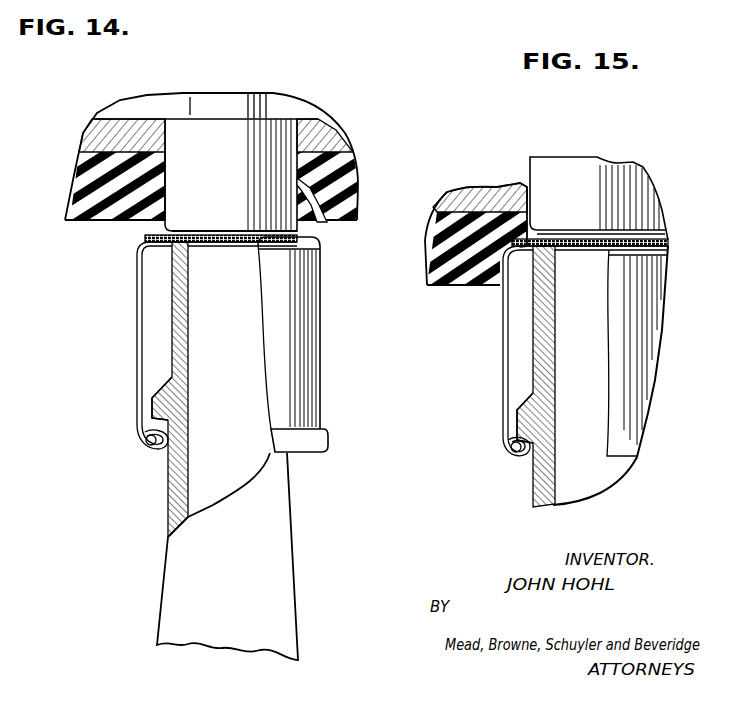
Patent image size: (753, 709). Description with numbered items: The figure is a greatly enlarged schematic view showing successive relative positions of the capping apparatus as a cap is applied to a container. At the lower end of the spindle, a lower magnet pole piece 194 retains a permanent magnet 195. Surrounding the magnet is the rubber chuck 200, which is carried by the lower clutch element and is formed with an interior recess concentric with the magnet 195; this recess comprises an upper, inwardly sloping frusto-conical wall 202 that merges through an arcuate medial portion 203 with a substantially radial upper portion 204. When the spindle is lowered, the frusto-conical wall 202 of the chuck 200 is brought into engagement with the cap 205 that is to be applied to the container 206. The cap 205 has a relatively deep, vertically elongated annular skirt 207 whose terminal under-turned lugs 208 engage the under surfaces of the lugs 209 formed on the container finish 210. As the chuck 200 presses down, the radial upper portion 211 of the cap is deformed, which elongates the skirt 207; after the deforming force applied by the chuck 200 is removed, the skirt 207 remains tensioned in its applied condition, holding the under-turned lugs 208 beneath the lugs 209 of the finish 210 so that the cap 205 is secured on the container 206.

In FIG. 14, the lower magnet pole piece 194 is at (228, 231).
In FIG. 15, the lower magnet pole piece 194 is at (552, 234).
In FIG. 14, the permanent magnet 195 is at (235, 170).
In FIG. 15, the permanent magnet 195 is at (600, 202).
In FIG. 14, the rubber chuck 200 is at (340, 190).
In FIG. 15, the rubber chuck 200 is at (425, 245).
In FIG. 14, the frusto-conical wall 202 is at (140, 212).
In FIG. 14, the arcuate medial portion 203 is at (158, 180).
In FIG. 14, the radial upper portion 204 is at (312, 222).
In FIG. 14, the cap 205 is at (300, 342).
In FIG. 15, the cap 205 is at (637, 362).
In FIG. 14, the container 206 is at (248, 551).
In FIG. 15, the container 206 is at (603, 476).
In FIG. 14, the annular skirt 207 is at (135, 345).
In FIG. 15, the annular skirt 207 is at (500, 352).
In FIG. 14, the under-turned lugs 208 is at (157, 452).
In FIG. 15, the under-turned lugs 208 is at (520, 457).
In FIG. 14, the lugs 209 is at (160, 410).
In FIG. 15, the lugs 209 is at (527, 425).
In FIG. 14, the container finish 210 is at (178, 330).
In FIG. 15, the container finish 210 is at (548, 363).
In FIG. 14, the radial upper portion 211 is at (220, 244).
In FIG. 15, the radial upper portion 211 is at (573, 248).